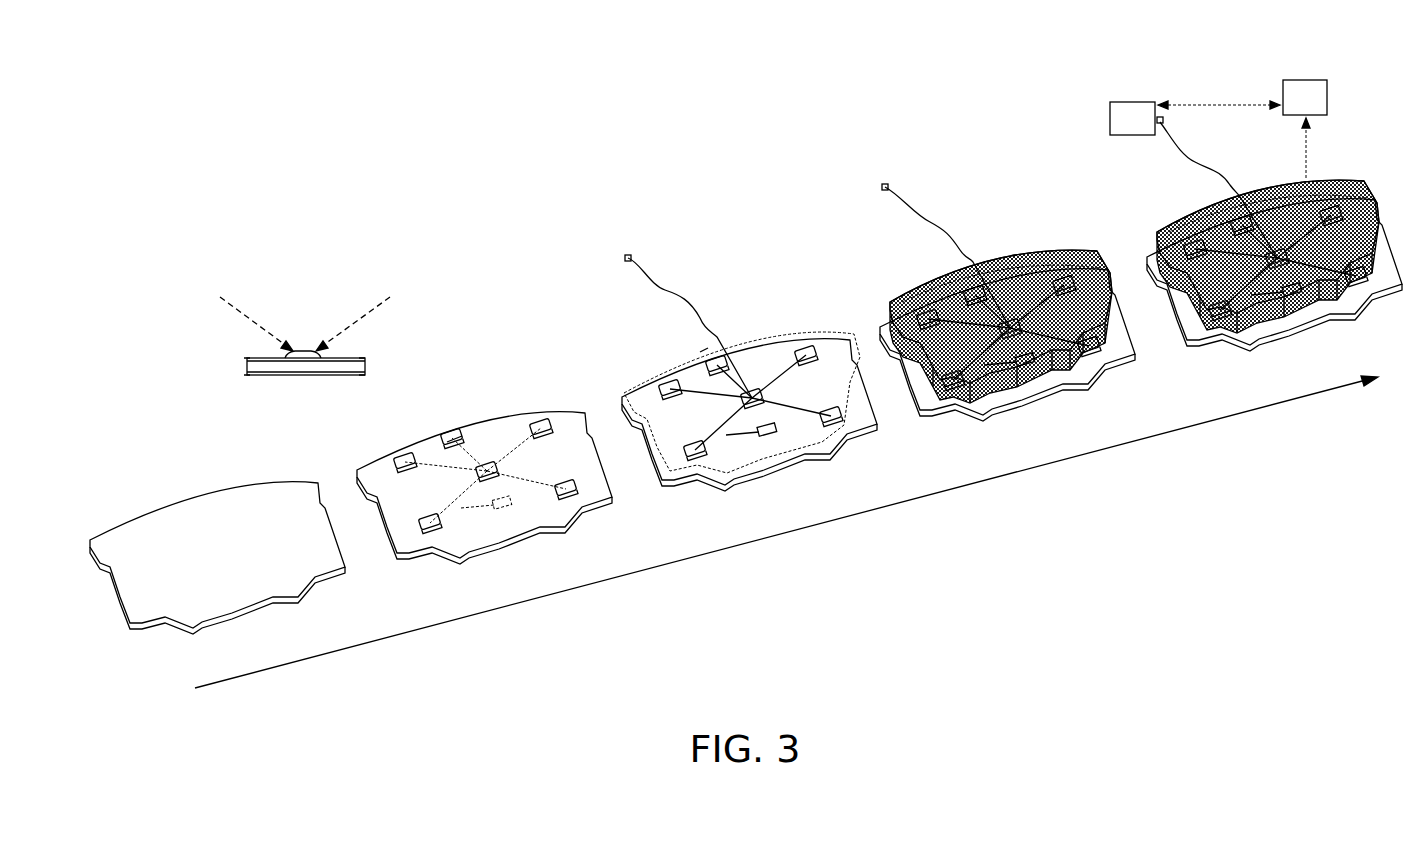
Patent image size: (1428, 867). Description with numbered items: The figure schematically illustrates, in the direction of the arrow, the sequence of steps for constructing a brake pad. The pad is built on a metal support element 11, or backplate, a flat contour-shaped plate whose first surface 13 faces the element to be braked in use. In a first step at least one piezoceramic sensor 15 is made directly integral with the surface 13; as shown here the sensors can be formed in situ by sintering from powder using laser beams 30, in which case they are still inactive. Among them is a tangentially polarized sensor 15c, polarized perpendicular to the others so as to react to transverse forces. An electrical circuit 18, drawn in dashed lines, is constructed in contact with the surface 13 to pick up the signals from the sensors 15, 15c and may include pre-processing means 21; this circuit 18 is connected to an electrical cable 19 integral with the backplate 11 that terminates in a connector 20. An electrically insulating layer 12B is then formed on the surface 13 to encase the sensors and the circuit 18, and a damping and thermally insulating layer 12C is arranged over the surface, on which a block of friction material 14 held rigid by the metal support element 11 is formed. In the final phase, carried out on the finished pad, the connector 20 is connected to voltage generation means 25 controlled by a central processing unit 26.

The metal support element 11 is at (125, 612).
The electrically insulating layer 12B is at (710, 478).
The damping and thermally insulating layer 12C is at (787, 337).
The first surface 13 is at (134, 522).
The block of friction material 14 is at (1020, 250).
The piezoceramic sensor 15 is at (305, 350).
The tangentially polarized sensor 15c is at (445, 445).
The electrical circuit 18 is at (470, 455).
The electrical cable 19 is at (707, 317).
The connector 20 is at (628, 255).
The pre-processing means 21 is at (770, 442).
The voltage generation means 25 is at (1118, 115).
The central processing unit 26 is at (1317, 88).
The laser beams 30 is at (252, 310).